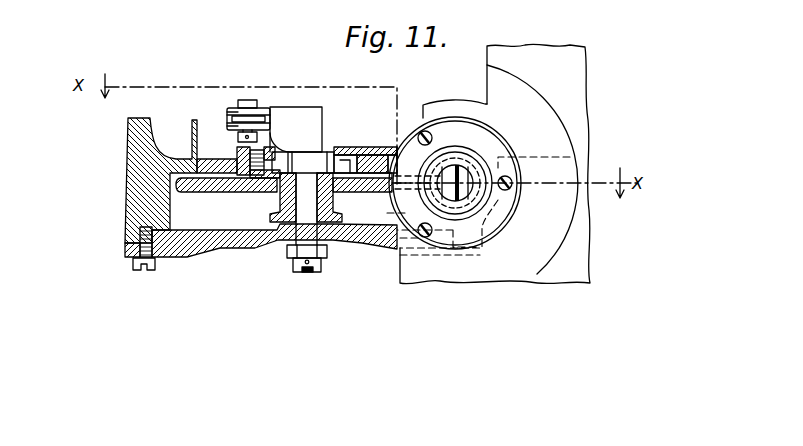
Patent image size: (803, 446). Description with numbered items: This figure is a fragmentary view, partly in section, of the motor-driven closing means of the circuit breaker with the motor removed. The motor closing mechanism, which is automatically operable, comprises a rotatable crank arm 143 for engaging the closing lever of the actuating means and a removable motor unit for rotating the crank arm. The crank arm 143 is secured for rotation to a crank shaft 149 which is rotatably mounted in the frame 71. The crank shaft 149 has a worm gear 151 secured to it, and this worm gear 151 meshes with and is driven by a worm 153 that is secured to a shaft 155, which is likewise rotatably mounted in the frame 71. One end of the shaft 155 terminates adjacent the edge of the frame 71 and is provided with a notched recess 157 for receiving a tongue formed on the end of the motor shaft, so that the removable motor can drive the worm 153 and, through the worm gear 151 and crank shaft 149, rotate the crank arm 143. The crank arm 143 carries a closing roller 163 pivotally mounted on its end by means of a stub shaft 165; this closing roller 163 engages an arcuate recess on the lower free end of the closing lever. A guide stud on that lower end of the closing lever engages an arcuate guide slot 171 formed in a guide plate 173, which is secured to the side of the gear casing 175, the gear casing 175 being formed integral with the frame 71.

The frame 71 is at (151, 128).
The crank arm 143 is at (288, 108).
The crank shaft 149 is at (305, 205).
The worm gear 151 is at (224, 195).
The worm 153 is at (468, 116).
The shaft 155 is at (460, 180).
The notched recess 157 is at (449, 186).
The closing roller 163 is at (233, 118).
The stub shaft 165 is at (250, 100).
The arcuate guide slot 171 is at (393, 158).
The guide plate 173 is at (371, 148).
The gear casing 175 is at (197, 158).